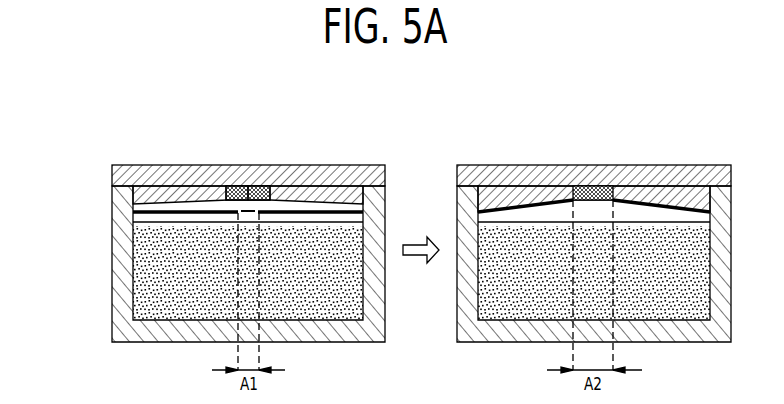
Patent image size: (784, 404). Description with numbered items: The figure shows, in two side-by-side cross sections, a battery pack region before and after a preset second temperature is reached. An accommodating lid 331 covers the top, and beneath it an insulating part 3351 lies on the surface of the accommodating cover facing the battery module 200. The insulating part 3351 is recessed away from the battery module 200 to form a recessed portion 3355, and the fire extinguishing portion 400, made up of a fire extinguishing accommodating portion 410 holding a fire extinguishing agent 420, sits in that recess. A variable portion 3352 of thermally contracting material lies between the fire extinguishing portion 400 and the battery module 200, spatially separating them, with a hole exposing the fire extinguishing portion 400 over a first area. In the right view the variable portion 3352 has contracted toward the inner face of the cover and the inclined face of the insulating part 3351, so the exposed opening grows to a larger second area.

The accommodating lid 331 is at (117, 177).
The insulating part 3351 is at (135, 199).
The variable portion 3352 is at (143, 213).
The recessed portion 3355 is at (247, 209).
The battery module 200 is at (158, 282).
The fire extinguishing portion 400 is at (225, 114).
The fire extinguishing accommodating portion 410 is at (250, 185).
The fire extinguishing agent 420 is at (272, 190).